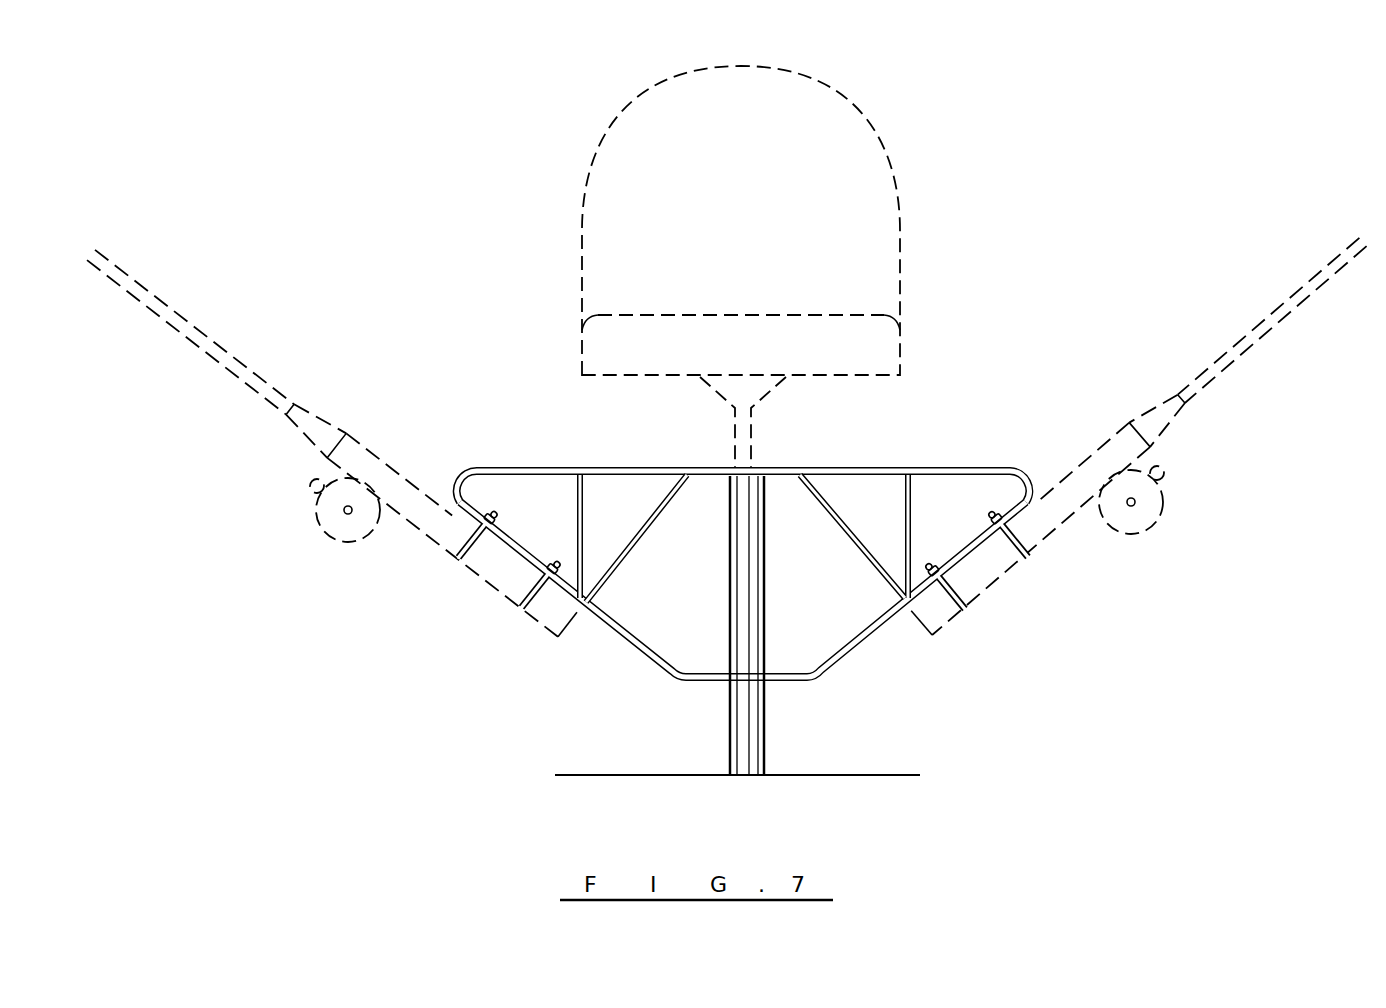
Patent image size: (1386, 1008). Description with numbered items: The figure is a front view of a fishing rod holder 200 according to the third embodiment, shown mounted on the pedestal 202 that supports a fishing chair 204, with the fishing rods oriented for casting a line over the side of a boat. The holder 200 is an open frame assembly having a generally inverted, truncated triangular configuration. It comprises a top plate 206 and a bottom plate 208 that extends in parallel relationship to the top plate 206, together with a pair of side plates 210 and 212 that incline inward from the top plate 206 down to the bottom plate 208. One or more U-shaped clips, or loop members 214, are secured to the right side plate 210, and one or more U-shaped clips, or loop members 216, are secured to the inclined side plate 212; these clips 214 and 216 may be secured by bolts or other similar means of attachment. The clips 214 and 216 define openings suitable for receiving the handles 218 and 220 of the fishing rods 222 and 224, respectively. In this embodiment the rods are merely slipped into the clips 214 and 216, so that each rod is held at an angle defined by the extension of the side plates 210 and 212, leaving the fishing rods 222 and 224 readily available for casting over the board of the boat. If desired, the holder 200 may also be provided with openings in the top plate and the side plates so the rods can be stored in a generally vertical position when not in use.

The fishing rod holder 200 is at (743, 534).
The pedestal 202 is at (753, 430).
The fishing chair 204 is at (850, 108).
The top plate 206 is at (566, 465).
The bottom plate 208 is at (800, 683).
The side plate 210 is at (883, 630).
The side plate 212 is at (637, 657).
The U-shaped clips 214 is at (955, 591).
The U-shaped clips 216 is at (520, 586).
The handle 218 is at (1100, 448).
The handle 220 is at (400, 477).
The fishing rod 222 is at (1230, 349).
The fishing rod 224 is at (256, 379).